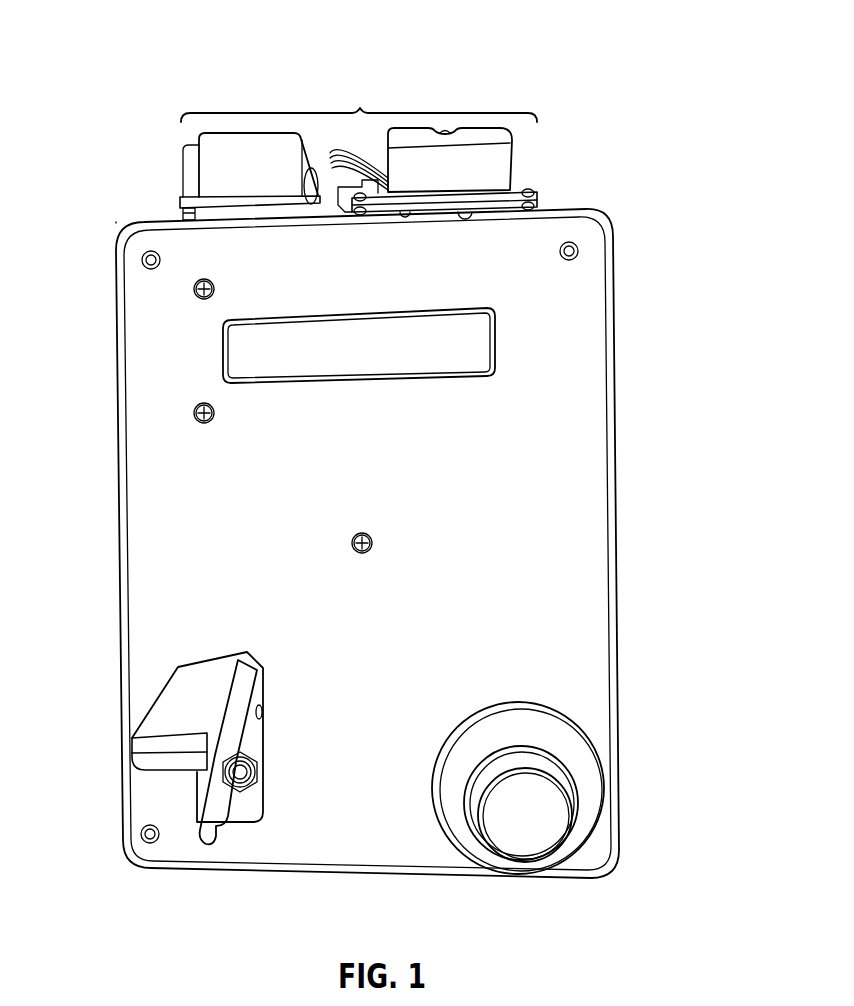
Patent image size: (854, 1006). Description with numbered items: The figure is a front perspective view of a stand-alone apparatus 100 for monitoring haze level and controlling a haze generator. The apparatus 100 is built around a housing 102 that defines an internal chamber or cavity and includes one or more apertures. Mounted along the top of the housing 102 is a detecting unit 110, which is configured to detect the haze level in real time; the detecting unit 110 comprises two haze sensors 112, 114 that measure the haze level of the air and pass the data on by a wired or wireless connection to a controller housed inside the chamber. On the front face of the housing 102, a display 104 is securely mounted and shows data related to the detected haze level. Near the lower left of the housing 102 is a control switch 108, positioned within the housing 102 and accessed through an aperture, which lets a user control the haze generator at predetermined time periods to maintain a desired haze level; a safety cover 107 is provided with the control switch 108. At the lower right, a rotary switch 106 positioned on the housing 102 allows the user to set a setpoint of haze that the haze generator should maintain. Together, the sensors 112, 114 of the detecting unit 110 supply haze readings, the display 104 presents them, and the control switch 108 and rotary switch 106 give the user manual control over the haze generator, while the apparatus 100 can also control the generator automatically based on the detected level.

The apparatus 100 is at (163, 60).
The housing 102 is at (608, 418).
The display 104 is at (470, 340).
The rotary switch 106 is at (520, 850).
The safety cover 107 is at (145, 745).
The control switch 108 is at (206, 843).
The detecting unit 110 is at (359, 98).
The haze sensor 112 is at (497, 167).
The haze sensor 114 is at (205, 170).